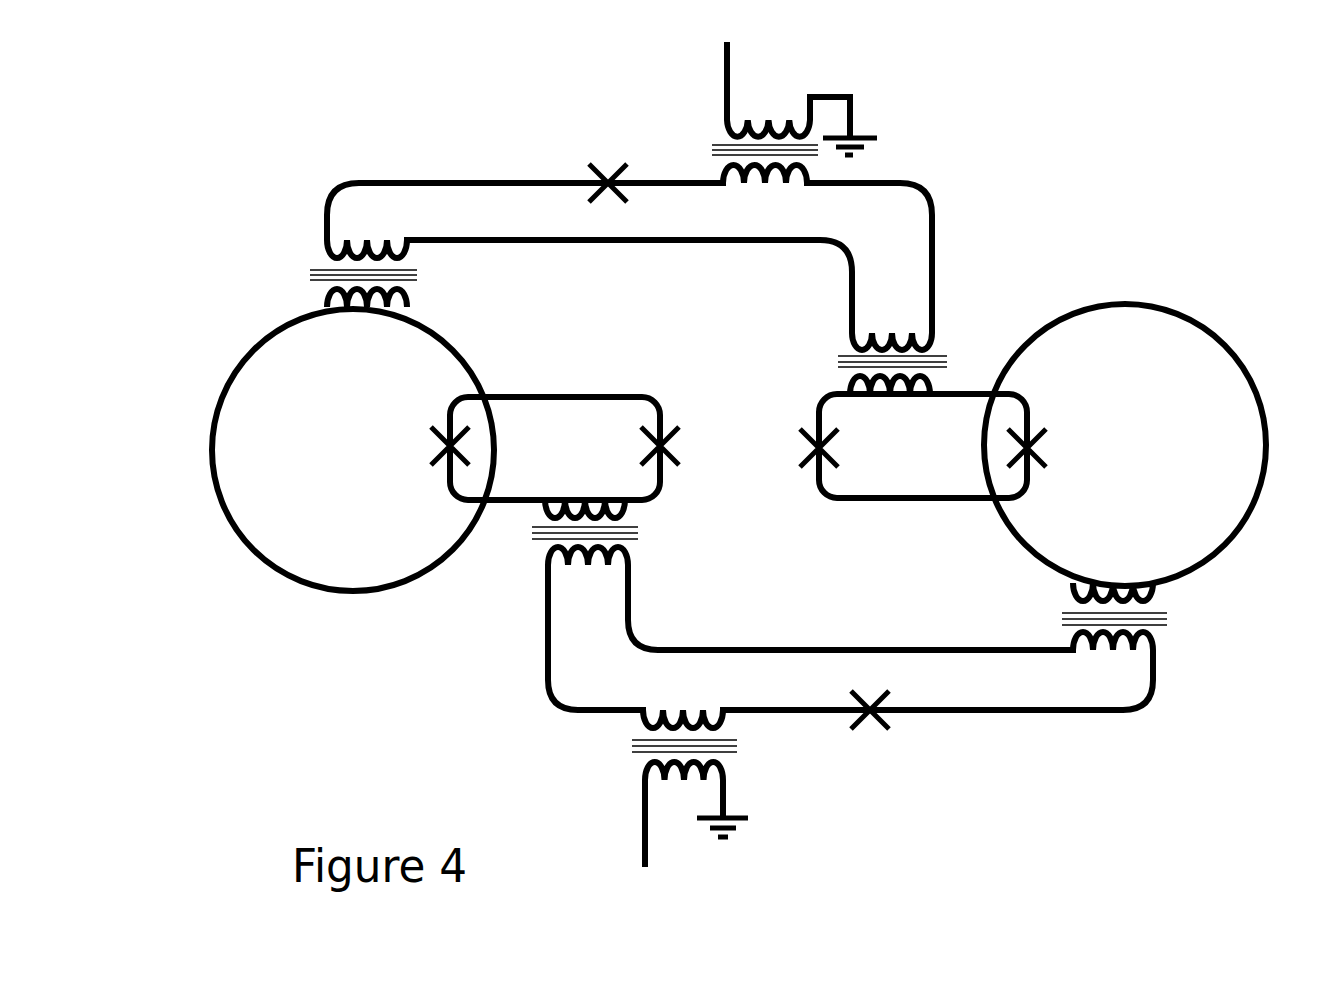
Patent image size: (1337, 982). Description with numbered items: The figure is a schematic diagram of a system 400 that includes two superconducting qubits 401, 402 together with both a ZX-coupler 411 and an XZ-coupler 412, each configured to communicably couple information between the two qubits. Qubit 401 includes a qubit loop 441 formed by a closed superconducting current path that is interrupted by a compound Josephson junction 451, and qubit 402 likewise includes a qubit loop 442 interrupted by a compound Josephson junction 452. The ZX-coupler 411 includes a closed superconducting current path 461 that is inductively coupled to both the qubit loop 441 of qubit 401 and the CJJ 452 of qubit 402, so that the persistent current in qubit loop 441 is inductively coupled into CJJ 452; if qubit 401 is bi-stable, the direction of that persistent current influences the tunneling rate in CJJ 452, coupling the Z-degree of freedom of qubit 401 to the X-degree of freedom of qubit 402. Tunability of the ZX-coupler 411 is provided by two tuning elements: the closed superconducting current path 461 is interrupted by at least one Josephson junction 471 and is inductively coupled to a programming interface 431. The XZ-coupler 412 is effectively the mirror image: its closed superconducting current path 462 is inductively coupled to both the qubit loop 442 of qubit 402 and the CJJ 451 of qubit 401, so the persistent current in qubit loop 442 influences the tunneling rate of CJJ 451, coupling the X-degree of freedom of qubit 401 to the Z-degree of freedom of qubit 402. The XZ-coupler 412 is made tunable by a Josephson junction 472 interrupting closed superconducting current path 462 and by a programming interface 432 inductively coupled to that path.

The system 400 is at (247, 144).
The superconducting qubit 401 is at (339, 462).
The superconducting qubit 402 is at (1099, 462).
The ZX-coupler 411 is at (480, 210).
The XZ-coupler 412 is at (1000, 680).
The programming interface 431 is at (767, 118).
The programming interface 432 is at (677, 778).
The qubit loop 441 is at (255, 347).
The qubit loop 442 is at (1250, 500).
The compound Josephson junction 451 is at (523, 399).
The compound Josephson junction 452 is at (950, 396).
The closed superconducting current path 461 is at (923, 190).
The closed superconducting current path 462 is at (546, 672).
The Josephson junction 471 is at (603, 168).
The Josephson junction 472 is at (871, 722).